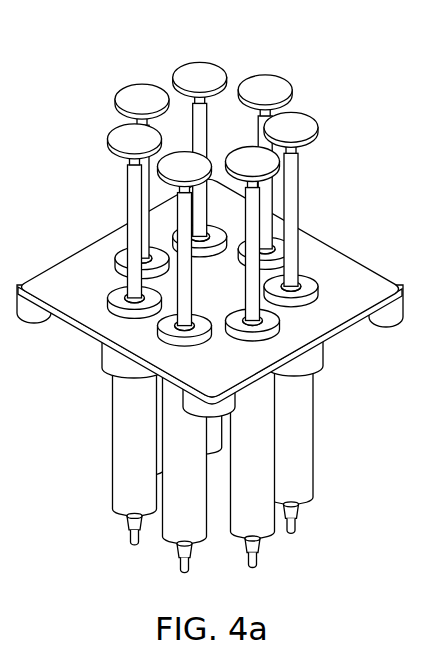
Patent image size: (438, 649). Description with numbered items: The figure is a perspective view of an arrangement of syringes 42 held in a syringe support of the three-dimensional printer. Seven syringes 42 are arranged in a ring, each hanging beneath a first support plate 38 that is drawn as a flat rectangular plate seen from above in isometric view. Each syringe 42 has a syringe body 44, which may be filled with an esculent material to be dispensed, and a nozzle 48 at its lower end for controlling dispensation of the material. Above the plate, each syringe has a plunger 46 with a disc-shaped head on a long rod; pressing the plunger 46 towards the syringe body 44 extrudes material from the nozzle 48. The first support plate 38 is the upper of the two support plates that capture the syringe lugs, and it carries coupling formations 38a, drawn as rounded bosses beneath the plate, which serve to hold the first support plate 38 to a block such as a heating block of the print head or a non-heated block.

The first support plate 38 is at (352, 272).
The coupling formations 38a is at (392, 328).
The syringes 42 is at (221, 296).
The syringe body 44 is at (299, 453).
The plunger 46 is at (268, 88).
The nozzle 48 is at (292, 529).